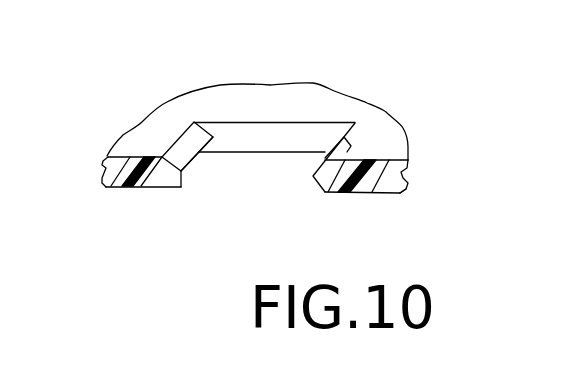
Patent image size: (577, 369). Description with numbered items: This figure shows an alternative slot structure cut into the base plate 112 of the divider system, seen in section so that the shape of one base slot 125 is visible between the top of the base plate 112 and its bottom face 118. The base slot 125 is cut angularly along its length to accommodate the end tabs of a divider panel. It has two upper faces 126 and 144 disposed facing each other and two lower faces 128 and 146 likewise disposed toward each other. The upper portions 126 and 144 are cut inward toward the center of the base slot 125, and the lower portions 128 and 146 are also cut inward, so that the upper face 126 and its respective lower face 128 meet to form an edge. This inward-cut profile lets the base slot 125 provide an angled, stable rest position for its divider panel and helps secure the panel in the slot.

The base plate 112 is at (347, 152).
The bottom face 118 is at (391, 193).
The base slot 125 is at (224, 221).
The upper face 126 is at (190, 146).
The lower face 128 is at (199, 153).
The upper face 144 is at (323, 123).
The lower face 146 is at (323, 191).